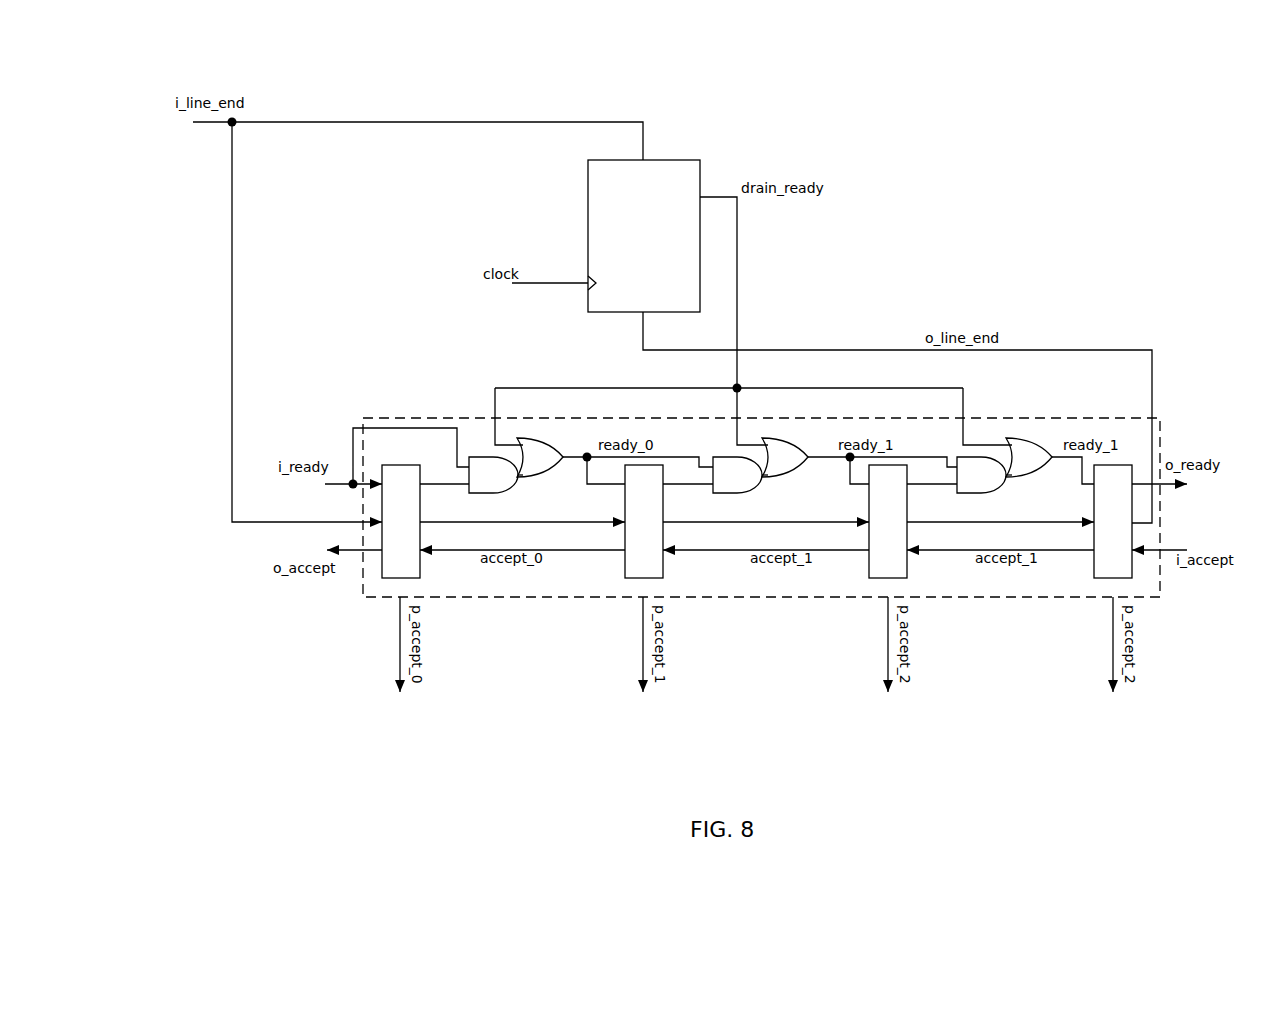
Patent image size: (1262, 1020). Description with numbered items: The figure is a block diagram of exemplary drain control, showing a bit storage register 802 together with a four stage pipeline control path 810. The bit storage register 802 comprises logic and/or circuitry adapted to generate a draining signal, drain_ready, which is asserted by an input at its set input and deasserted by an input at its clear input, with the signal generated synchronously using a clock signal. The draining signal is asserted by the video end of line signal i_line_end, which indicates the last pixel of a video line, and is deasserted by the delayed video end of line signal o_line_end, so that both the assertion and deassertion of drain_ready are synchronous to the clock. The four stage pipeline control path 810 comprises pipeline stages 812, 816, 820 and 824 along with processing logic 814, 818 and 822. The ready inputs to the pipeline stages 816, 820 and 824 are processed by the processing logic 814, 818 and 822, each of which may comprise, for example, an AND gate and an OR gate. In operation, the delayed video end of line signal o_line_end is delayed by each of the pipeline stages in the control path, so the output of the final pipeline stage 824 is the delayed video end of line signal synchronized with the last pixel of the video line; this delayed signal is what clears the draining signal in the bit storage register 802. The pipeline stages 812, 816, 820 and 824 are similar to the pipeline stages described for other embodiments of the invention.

The bit storage register 802 is at (690, 160).
The four stage pipeline control path 810 is at (1160, 418).
The pipeline stage 812 is at (382, 578).
The processing logic 814 is at (555, 440).
The pipeline stage 816 is at (625, 578).
The processing logic 818 is at (800, 440).
The pipeline stage 820 is at (869, 578).
The processing logic 822 is at (1044, 440).
The pipeline stage 824 is at (1094, 578).